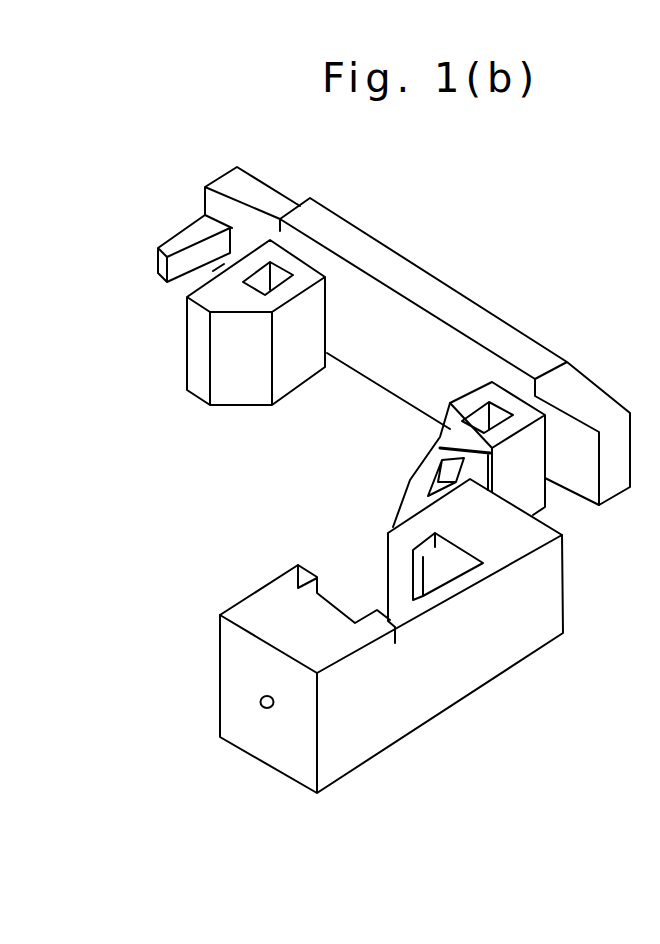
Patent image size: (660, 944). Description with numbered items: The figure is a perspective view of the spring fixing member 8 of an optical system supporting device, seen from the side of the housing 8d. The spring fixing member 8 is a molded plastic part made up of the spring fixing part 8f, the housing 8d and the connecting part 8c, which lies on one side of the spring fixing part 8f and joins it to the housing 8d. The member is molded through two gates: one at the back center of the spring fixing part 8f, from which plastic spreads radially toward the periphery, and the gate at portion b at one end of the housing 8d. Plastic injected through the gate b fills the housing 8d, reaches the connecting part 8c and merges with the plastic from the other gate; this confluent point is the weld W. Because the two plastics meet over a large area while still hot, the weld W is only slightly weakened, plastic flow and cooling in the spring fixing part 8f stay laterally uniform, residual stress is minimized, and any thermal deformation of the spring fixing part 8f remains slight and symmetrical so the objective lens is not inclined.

The spring fixing member 8 is at (408, 224).
The spring fixing part 8f is at (427, 288).
The connecting part 8c is at (447, 438).
The housing 8d is at (262, 600).
The weld W is at (490, 477).
The gate at portion b is at (262, 709).